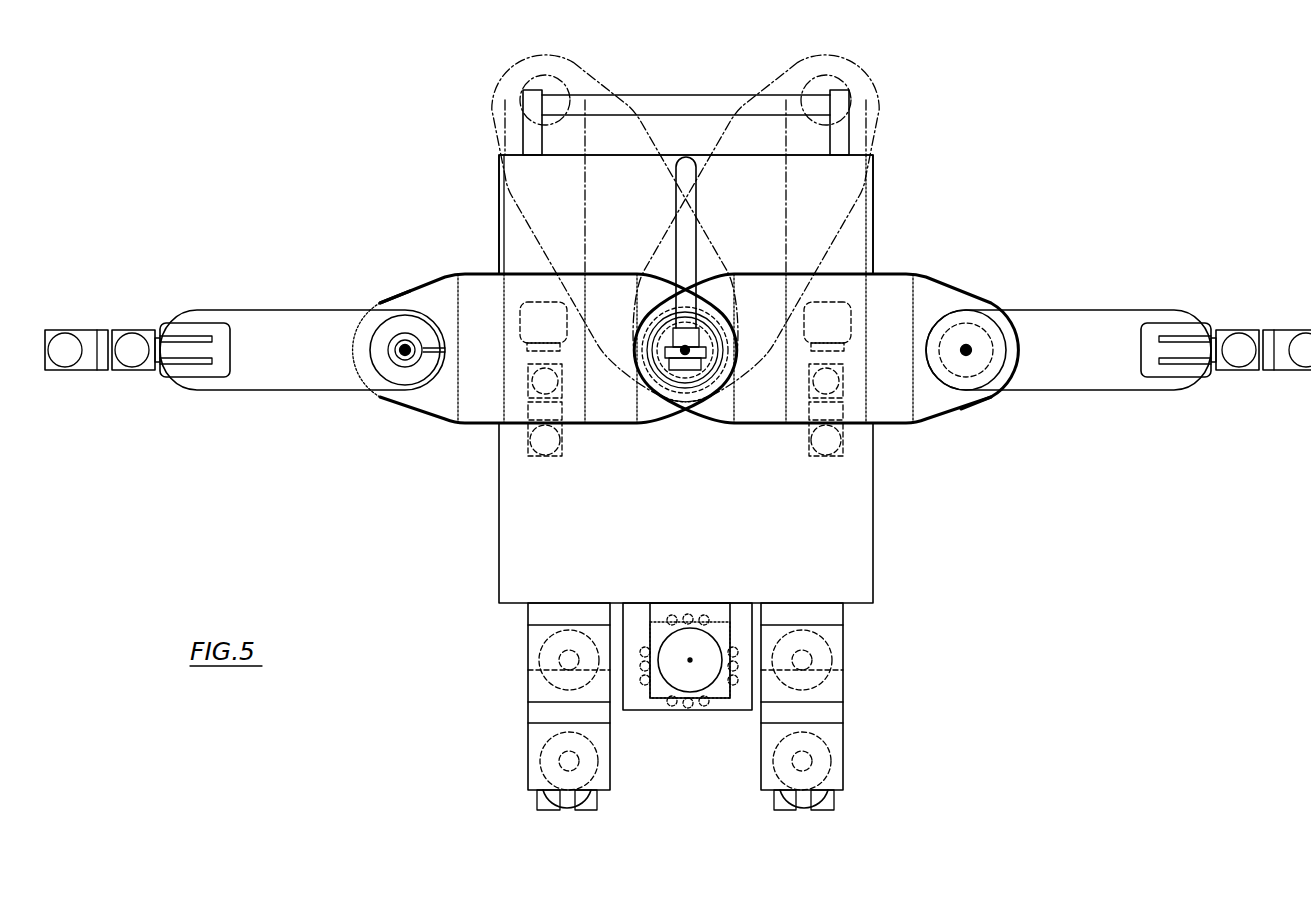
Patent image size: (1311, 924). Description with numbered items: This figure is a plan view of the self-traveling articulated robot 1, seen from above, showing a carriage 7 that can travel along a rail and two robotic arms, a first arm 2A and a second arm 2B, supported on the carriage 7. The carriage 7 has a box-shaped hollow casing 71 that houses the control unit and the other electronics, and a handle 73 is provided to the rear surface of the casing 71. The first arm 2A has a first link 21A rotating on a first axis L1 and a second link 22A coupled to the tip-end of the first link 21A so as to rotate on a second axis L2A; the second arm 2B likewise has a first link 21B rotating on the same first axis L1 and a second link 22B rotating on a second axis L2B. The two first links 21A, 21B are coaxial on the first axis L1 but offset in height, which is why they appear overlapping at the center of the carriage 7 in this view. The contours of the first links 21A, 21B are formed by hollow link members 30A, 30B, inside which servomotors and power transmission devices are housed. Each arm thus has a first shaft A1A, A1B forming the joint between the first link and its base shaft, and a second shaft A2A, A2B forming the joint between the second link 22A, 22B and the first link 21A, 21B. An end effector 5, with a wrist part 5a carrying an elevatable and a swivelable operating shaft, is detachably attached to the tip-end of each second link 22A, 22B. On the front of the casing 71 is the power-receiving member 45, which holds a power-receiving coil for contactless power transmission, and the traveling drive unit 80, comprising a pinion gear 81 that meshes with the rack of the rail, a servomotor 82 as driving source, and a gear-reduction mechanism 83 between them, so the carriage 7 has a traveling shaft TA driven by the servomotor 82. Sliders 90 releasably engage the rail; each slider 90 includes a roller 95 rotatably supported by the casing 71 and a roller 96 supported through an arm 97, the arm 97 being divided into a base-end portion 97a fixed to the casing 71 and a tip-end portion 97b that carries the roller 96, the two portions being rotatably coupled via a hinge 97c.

The robot 1 is at (1005, 160).
The first arm 2A is at (448, 360).
The second arm 2B is at (922, 354).
The end effector 5 is at (100, 378).
The wrist part 5a is at (1255, 330).
The carriage 7 is at (875, 233).
The casing 71 is at (875, 190).
The handle 73 is at (853, 127).
The first link 21A is at (478, 427).
The first link 21B is at (905, 425).
The second link 22A is at (258, 391).
The second link 22B is at (1110, 392).
The link member 30A is at (445, 276).
The link member 30B is at (948, 424).
The power-receiving member 45 is at (633, 712).
The traveling drive unit 80 is at (683, 743).
The pinion gear 81 is at (668, 703).
The servomotor 82 is at (700, 703).
The gear-reduction mechanism 83 is at (706, 700).
The slider 90 is at (540, 828).
The roller 95 is at (528, 643).
The roller 96 is at (528, 731).
The arm 97 is at (498, 690).
The base-end portion 97a is at (528, 676).
The tip-end portion 97b is at (528, 763).
The hinge 97c is at (537, 803).
The first shaft A1A is at (710, 427).
The first shaft A1B is at (667, 427).
The second shaft A2A is at (376, 298).
The second shaft A2B is at (1000, 402).
The first axis L1 is at (684, 354).
The second axis L2A is at (405, 352).
The second axis L2B is at (969, 349).
The traveling shaft TA is at (688, 662).